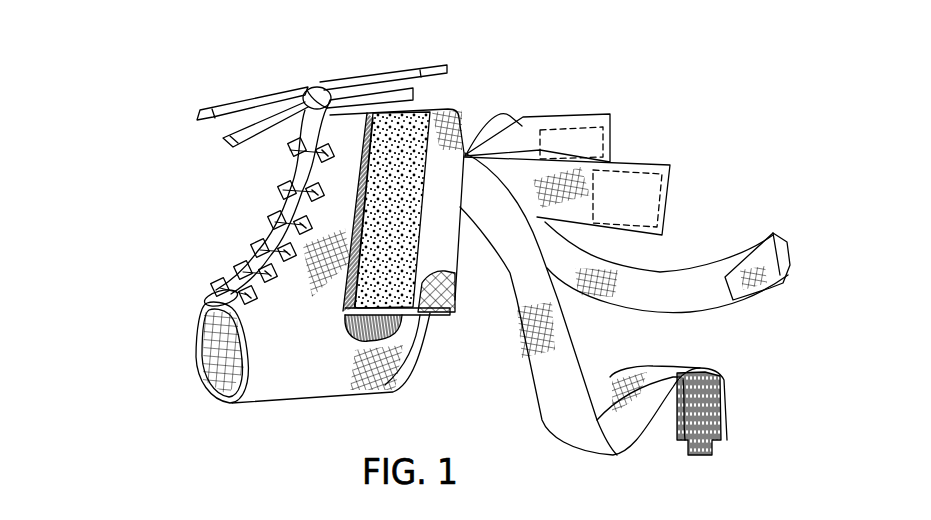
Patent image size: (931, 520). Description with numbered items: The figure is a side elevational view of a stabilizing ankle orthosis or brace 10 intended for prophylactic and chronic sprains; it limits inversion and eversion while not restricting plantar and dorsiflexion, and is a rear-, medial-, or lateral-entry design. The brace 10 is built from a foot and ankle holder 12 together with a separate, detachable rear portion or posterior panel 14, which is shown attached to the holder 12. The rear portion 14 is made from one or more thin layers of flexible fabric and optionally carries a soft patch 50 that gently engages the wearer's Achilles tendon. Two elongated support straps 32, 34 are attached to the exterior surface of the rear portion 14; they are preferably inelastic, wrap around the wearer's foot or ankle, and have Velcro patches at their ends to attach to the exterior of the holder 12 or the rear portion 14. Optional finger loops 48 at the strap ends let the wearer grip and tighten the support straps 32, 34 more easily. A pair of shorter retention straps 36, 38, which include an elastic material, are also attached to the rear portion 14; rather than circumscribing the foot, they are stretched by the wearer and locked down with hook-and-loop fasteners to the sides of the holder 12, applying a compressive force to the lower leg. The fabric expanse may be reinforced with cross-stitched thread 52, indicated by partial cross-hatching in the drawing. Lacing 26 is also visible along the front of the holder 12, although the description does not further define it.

The ankle brace 10 is at (114, 166).
The foot and ankle holder 12 is at (270, 395).
The rear portion 14 is at (465, 118).
The laces 26 is at (308, 87).
The support strap 32 is at (727, 408).
The support strap 34 is at (722, 313).
The retention strap 36 is at (668, 197).
The retention strap 38 is at (614, 130).
The finger loop 48 is at (790, 240).
The soft patch 50 is at (453, 291).
The cross-stitched thread 52 is at (213, 330).